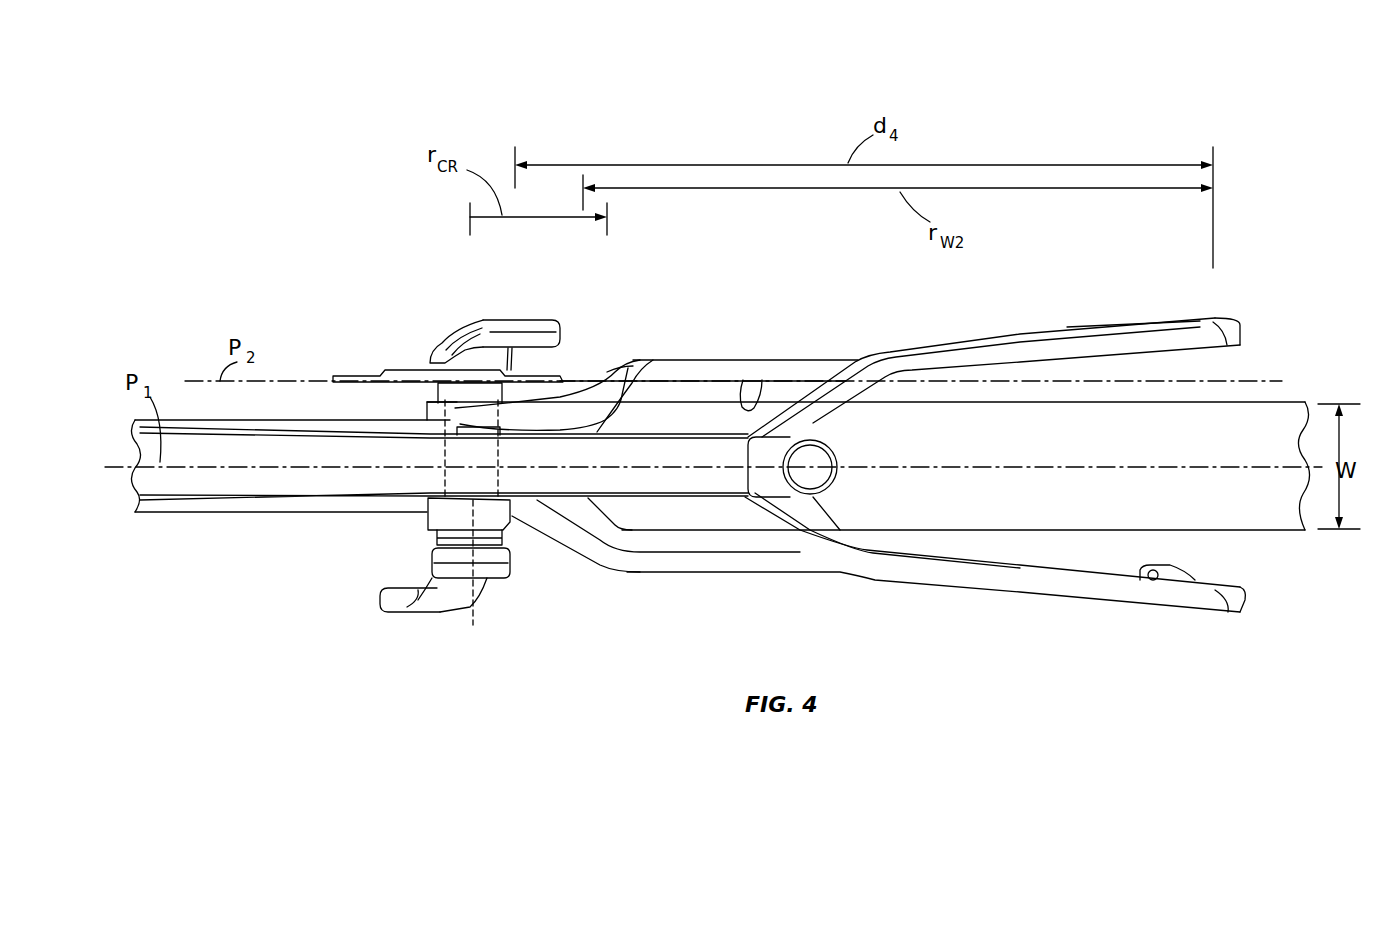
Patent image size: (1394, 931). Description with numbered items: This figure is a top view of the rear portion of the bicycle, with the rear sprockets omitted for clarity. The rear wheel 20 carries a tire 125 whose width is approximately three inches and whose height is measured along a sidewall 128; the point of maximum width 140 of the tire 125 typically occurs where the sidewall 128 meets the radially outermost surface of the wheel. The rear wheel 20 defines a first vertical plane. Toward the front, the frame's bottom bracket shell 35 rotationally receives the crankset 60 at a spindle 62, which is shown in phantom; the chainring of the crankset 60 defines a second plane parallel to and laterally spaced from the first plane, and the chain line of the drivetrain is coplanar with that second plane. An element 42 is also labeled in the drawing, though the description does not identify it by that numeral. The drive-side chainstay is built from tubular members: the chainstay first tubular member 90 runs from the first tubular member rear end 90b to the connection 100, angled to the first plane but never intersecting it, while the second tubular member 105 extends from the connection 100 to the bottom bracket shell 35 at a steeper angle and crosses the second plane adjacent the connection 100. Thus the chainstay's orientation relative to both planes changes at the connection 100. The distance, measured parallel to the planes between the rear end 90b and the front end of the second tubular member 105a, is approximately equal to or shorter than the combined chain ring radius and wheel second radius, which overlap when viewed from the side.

The rear wheel 20 is at (1262, 402).
The bottom bracket shell 35 is at (430, 514).
The crank axle 42 is at (743, 380).
The crankset 60 is at (510, 318).
The spindle 62 is at (445, 577).
The chainstay first tubular member 90 is at (813, 355).
The first tubular member rear end 90b is at (1225, 322).
The connection 100 is at (652, 360).
The second tubular member 105 is at (647, 365).
The front end of the second tubular member 105a is at (507, 383).
The tire 125 is at (1245, 531).
The sidewall 128 is at (980, 515).
The point of maximum width 140 is at (630, 365).